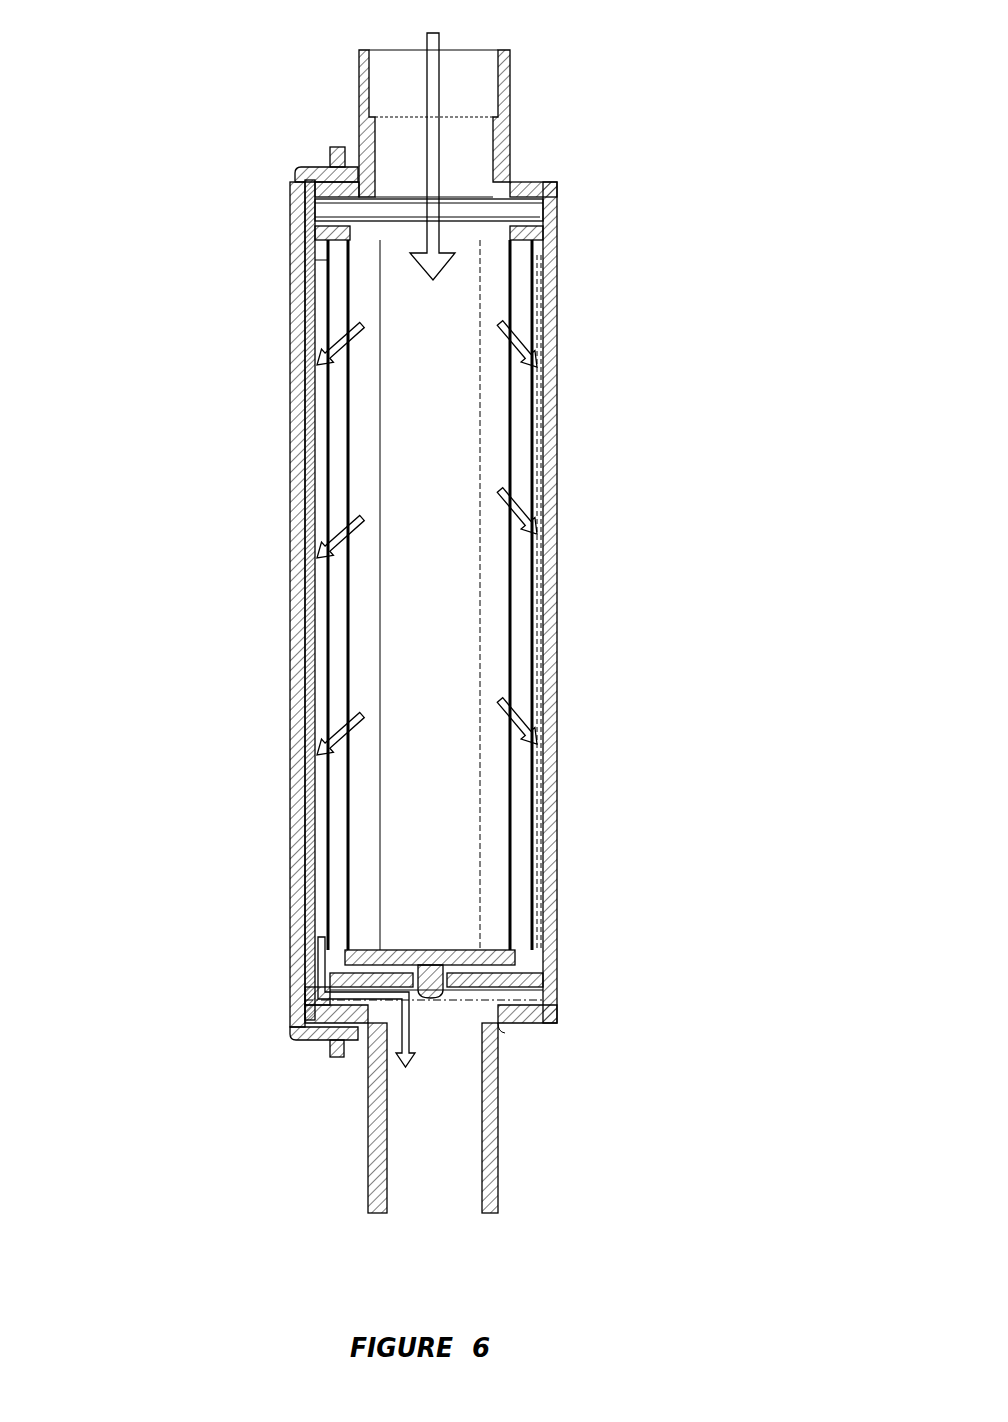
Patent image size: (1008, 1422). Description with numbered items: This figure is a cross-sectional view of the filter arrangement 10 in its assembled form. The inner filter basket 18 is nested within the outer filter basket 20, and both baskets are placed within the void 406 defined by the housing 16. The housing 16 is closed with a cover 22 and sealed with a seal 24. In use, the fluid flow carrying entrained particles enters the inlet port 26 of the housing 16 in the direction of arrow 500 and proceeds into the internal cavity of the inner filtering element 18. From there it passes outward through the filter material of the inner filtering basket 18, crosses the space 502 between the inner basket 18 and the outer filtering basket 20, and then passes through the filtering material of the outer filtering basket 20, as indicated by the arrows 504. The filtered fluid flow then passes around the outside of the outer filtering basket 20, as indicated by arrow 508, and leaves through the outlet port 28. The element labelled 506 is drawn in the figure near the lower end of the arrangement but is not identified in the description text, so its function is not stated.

The filter arrangement 10 is at (410, 609).
The housing 16 is at (557, 322).
The inner filter basket 18 is at (342, 469).
The outer filter basket 20 is at (320, 607).
The cover 22 is at (287, 206).
The seal 24 is at (291, 1005).
The inlet port 26 is at (512, 131).
The outlet port 28 is at (497, 1160).
The void 406 is at (305, 646).
The arrow 500 is at (438, 88).
The space 502 is at (330, 260).
The arrows 504 is at (330, 338).
The lower plate 506 is at (503, 995).
The arrow 508 is at (307, 952).